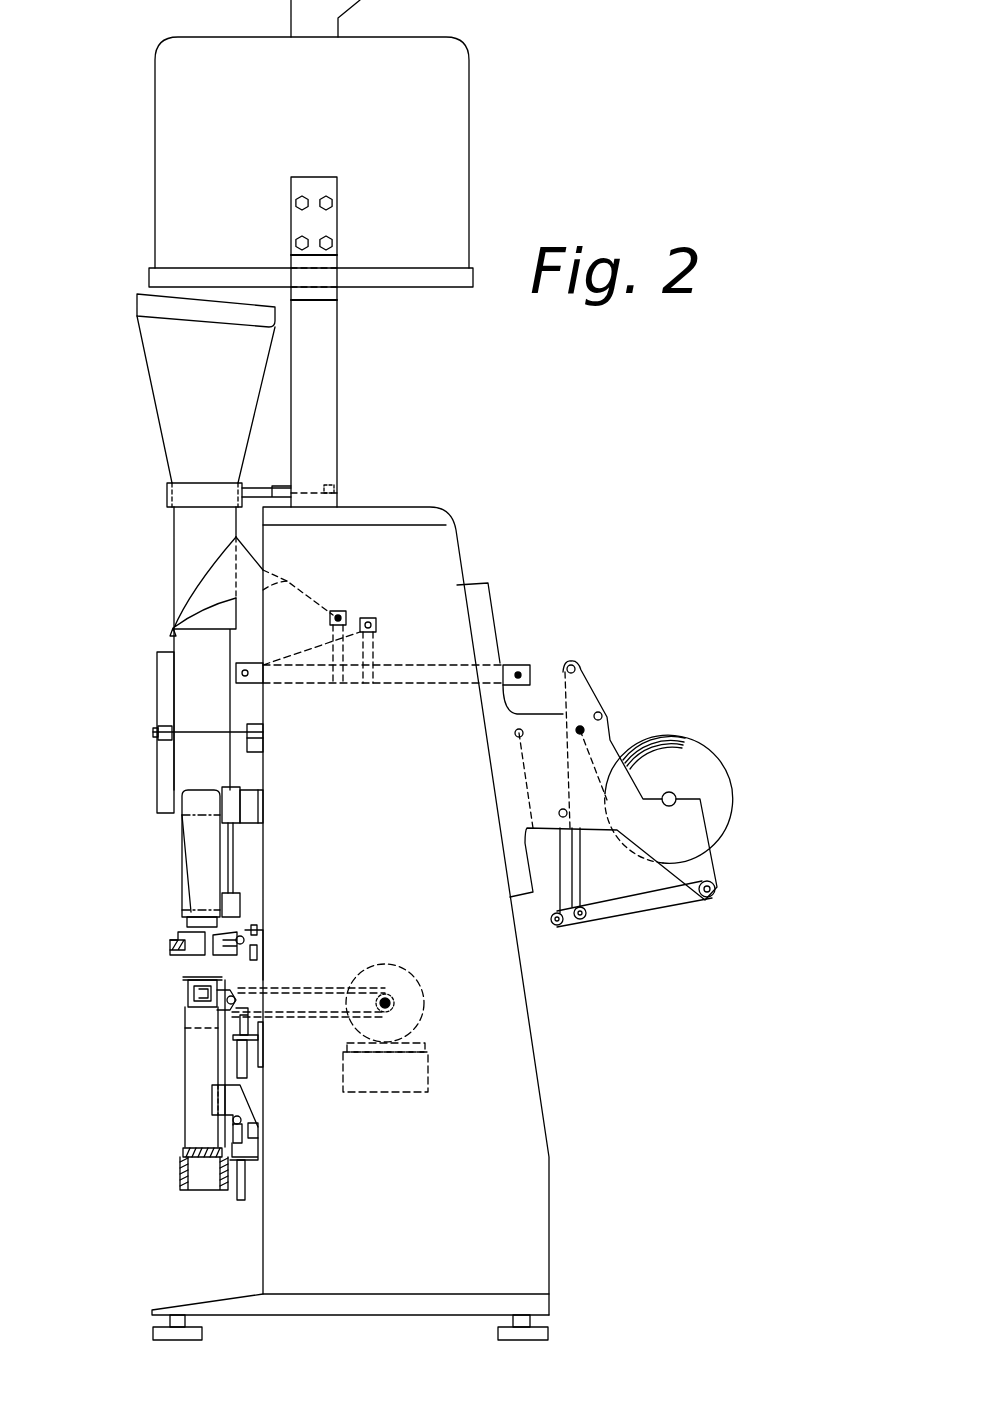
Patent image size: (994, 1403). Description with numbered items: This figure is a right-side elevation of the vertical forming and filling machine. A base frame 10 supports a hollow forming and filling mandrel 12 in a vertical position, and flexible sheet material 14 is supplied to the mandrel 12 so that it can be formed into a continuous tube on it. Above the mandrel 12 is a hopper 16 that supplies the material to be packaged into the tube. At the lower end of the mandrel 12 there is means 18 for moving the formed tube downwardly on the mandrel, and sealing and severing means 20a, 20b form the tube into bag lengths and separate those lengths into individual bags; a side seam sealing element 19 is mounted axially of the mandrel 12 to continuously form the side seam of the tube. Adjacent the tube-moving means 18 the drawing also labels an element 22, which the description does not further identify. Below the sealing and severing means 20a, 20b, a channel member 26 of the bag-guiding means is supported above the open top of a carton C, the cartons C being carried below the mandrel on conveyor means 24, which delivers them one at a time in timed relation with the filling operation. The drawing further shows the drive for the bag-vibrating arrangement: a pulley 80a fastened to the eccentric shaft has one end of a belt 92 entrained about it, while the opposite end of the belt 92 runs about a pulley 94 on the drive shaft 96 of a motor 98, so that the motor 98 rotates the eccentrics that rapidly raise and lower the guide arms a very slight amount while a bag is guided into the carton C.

The base frame 10 is at (545, 1048).
The forming and filling mandrel 12 is at (174, 644).
The flexible sheet material 14 is at (312, 601).
The hopper 16 is at (148, 367).
The tube moving means 18 is at (163, 848).
The side seam sealing element 19 is at (157, 695).
The sealing and severing means 20a is at (160, 943).
The sealing and severing means 20b is at (160, 943).
The sealing head cylinder 22 is at (208, 848).
The conveyor means 24 is at (200, 1192).
The channel member 26 is at (173, 1000).
The pulley 80a is at (220, 1010).
The belt 92 is at (293, 988).
The pulley 94 is at (386, 995).
The drive shaft 96 is at (415, 983).
The motor 98 is at (417, 1010).
The carton C is at (185, 1092).